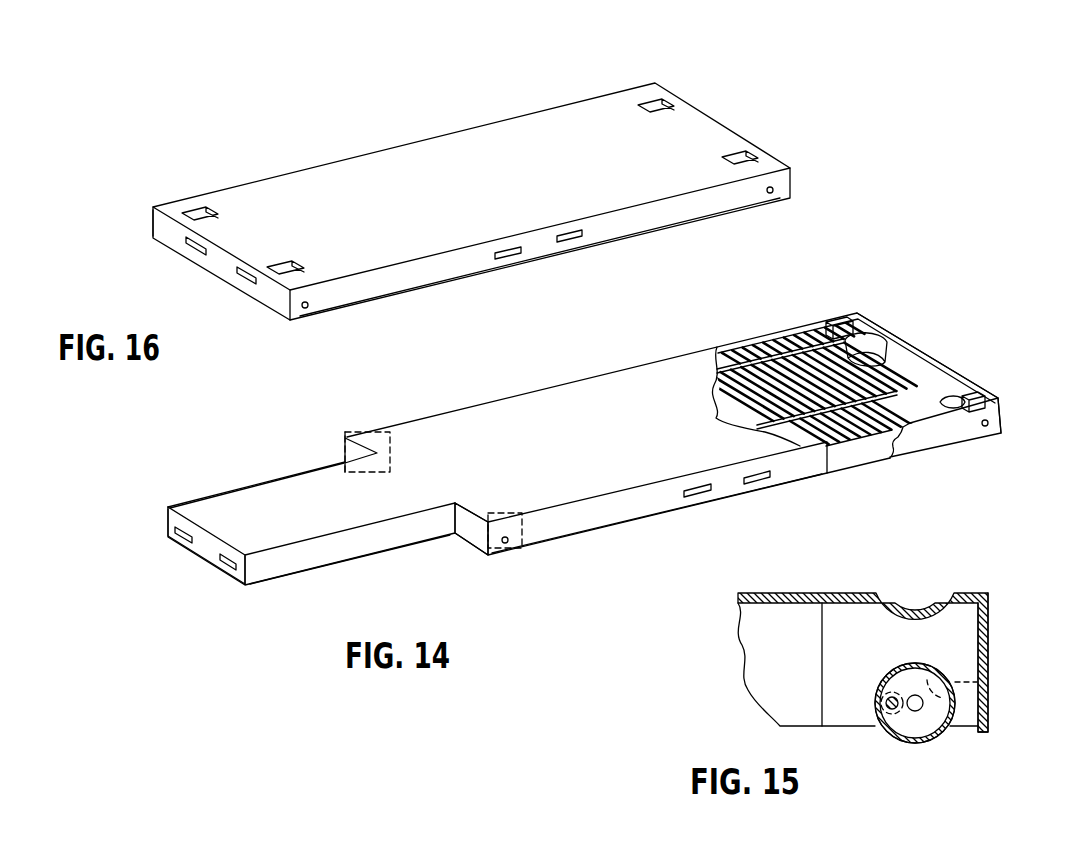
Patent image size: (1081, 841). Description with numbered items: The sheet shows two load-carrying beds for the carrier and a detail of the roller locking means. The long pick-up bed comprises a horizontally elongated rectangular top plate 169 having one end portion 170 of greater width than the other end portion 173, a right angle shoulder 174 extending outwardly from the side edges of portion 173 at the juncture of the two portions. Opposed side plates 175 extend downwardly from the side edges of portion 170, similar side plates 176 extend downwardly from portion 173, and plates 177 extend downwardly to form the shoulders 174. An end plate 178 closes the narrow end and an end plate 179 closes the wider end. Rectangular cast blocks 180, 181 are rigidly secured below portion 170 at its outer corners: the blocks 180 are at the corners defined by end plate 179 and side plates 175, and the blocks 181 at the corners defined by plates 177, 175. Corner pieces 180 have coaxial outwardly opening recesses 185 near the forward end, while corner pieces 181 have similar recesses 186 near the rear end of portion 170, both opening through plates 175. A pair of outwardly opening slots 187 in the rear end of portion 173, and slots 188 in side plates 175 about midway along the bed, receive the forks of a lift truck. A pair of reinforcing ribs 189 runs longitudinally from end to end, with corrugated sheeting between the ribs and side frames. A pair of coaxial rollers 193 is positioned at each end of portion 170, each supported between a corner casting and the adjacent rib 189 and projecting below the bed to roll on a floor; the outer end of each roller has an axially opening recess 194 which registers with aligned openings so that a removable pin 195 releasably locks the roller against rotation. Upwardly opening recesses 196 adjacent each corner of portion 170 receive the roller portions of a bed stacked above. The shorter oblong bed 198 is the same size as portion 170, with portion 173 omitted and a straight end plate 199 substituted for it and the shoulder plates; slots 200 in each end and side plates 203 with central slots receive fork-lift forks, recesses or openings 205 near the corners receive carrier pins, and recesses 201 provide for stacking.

In FIG. 14, the top plate 169 is at (570, 370).
In FIG. 14, the end portion of greater width 170 is at (596, 442).
In FIG. 15, the end portion of greater width 170 is at (850, 593).
In FIG. 14, the other end portion 173 is at (317, 513).
In FIG. 14, the right angle shoulder 174 is at (465, 511).
In FIG. 14, the side plates 175 is at (590, 515).
In FIG. 14, the side plates 176 is at (332, 556).
In FIG. 14, the plates 177 is at (360, 453).
In FIG. 14, the end plate 178 is at (167, 537).
In FIG. 14, the end plate 179 is at (905, 360).
In FIG. 15, the end plate 179 is at (988, 650).
In FIG. 14, the rectangular cast blocks 180 is at (836, 318).
In FIG. 14, the rectangular cast blocks 181 is at (360, 436).
In FIG. 14, the recesses 185 is at (988, 426).
In FIG. 15, the recesses 185 is at (988, 684).
In FIG. 14, the recesses 186 is at (507, 543).
In FIG. 14, the slots 187 is at (222, 560).
In FIG. 14, the slots 188 is at (757, 480).
In FIG. 14, the reinforcing ribs 189 is at (817, 415).
In FIG. 14, the rollers 193 is at (865, 342).
In FIG. 15, the rollers 193 is at (943, 735).
In FIG. 15, the recess 194 is at (910, 745).
In FIG. 15, the pin 195 is at (882, 712).
In FIG. 15, the recesses 196 is at (925, 603).
In FIG. 16, the oblong bed 198 is at (435, 128).
In FIG. 16, the straight end plate 199 is at (165, 230).
In FIG. 16, the slots 200 is at (240, 274).
In FIG. 16, the recesses 201 is at (200, 208).
In FIG. 16, the side plates 203 is at (390, 282).
In FIG. 16, the recesses or openings 205 is at (775, 195).